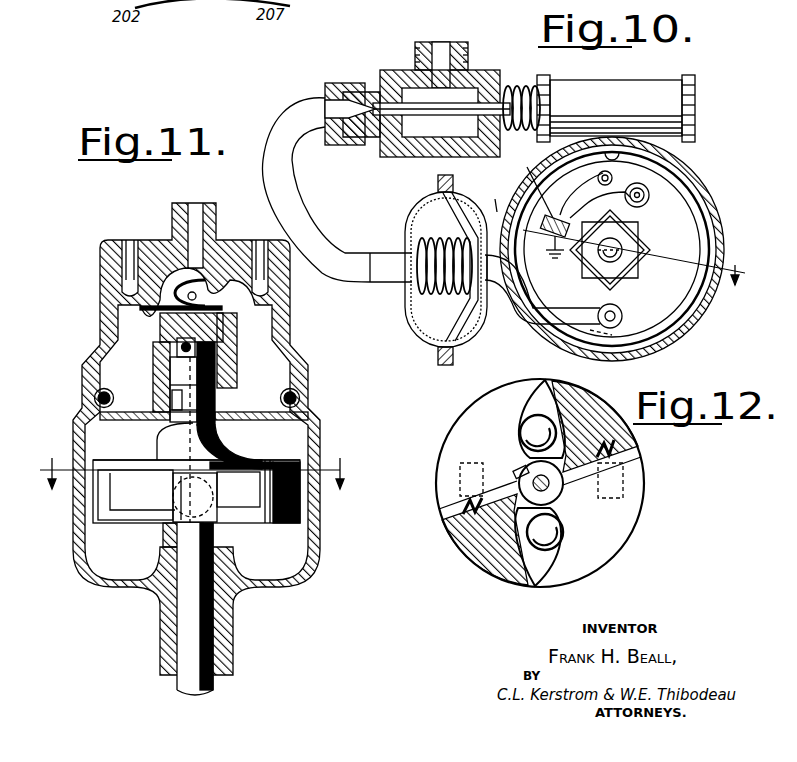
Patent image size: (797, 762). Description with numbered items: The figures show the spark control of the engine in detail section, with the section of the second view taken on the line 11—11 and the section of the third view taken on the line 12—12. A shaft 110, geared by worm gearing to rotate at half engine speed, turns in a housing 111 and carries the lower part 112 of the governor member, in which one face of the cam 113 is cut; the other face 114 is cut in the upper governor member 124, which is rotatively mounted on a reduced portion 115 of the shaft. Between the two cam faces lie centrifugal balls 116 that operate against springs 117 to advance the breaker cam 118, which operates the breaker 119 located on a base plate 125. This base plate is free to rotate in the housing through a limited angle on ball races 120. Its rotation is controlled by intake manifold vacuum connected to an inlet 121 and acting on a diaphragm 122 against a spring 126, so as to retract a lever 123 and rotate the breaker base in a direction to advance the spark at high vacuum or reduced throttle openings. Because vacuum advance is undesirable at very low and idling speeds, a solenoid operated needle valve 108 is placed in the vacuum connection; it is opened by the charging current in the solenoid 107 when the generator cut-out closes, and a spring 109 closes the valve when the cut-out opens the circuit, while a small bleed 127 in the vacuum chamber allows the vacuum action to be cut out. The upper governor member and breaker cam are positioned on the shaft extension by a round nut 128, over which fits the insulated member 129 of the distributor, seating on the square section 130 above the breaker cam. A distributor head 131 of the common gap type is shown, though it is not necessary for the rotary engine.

In FIG. 10, the section line 11— 11 is at (630, 236).
In FIG. 11, the section line 12— 12 is at (194, 473).
In FIG. 10, the solenoid 107 is at (612, 86).
In FIG. 10, the solenoid operated needle valve 108 is at (363, 88).
In FIG. 10, the spring 109 is at (512, 90).
In FIG. 11, the shaft 110 is at (186, 678).
In FIG. 11, the housing 111 is at (165, 597).
In FIG. 10, the housing 111 is at (693, 330).
In FIG. 11, the lower part of the governor member 112 is at (250, 521).
In FIG. 12, the lower part of the governor member 112 is at (463, 442).
In FIG. 11, the cam 113 is at (214, 502).
In FIG. 12, the cam 113 is at (524, 418).
In FIG. 10, the other cam face 114 is at (583, 350).
In FIG. 12, the other cam face 114 is at (560, 397).
In FIG. 11, the reduced portion of shaft 115 is at (225, 432).
In FIG. 10, the reduced portion of shaft 115 is at (627, 260).
In FIG. 12, the reduced portion of shaft 115 is at (546, 484).
In FIG. 11, the centrifugal balls 116 is at (224, 490).
In FIG. 12, the centrifugal balls 116 is at (524, 438).
In FIG. 12, the springs 117 is at (615, 452).
In FIG. 11, the breaker cam 118 is at (169, 397).
In FIG. 10, the breaker cam 118 is at (630, 277).
In FIG. 10, the breaker 119 is at (538, 172).
In FIG. 11, the ball races 120 is at (95, 400).
In FIG. 10, the ball races 120 is at (619, 319).
In FIG. 10, the inlet 121 is at (465, 56).
In FIG. 10, the diaphragm 122 is at (460, 323).
In FIG. 10, the lever 123 is at (528, 312).
In FIG. 11, the upper governor member 124 is at (135, 487).
In FIG. 10, the upper governor member 124 is at (618, 357).
In FIG. 12, the upper governor member 124 is at (590, 402).
In FIG. 11, the base plate 125 is at (160, 418).
In FIG. 10, the base plate 125 is at (672, 202).
In FIG. 10, the spring 126 is at (447, 287).
In FIG. 10, the bleed 127 is at (415, 327).
In FIG. 11, the round nut 128 is at (226, 345).
In FIG. 10, the round nut 128 is at (590, 255).
In FIG. 11, the insulated member 129 is at (162, 331).
In FIG. 11, the square section 130 is at (180, 373).
In FIG. 10, the square section 130 is at (637, 237).
In FIG. 11, the distributor head 131 is at (100, 268).